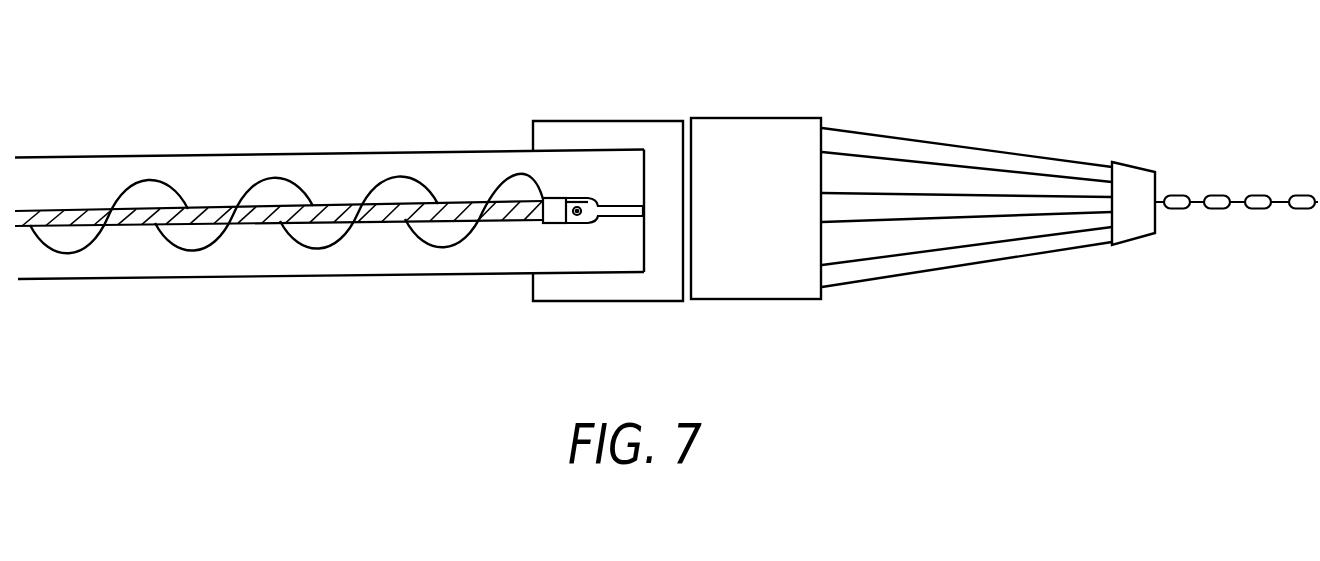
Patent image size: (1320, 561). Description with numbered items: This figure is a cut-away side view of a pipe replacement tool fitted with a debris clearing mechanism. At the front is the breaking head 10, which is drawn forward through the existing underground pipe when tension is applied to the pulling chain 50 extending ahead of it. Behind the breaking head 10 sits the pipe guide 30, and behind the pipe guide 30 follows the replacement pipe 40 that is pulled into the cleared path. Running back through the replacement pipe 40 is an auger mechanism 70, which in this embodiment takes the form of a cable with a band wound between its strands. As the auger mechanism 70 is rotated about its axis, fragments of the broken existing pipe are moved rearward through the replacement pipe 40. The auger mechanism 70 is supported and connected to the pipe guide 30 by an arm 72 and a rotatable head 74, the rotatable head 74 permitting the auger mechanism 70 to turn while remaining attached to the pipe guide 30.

The breaking head 10 is at (808, 118).
The pipe guide 30 is at (603, 120).
The replacement pipe 40 is at (185, 154).
The pulling chain 50 is at (1216, 195).
The auger mechanism 70 is at (401, 174).
The arm 72 is at (614, 222).
The rotatable head 74 is at (550, 224).